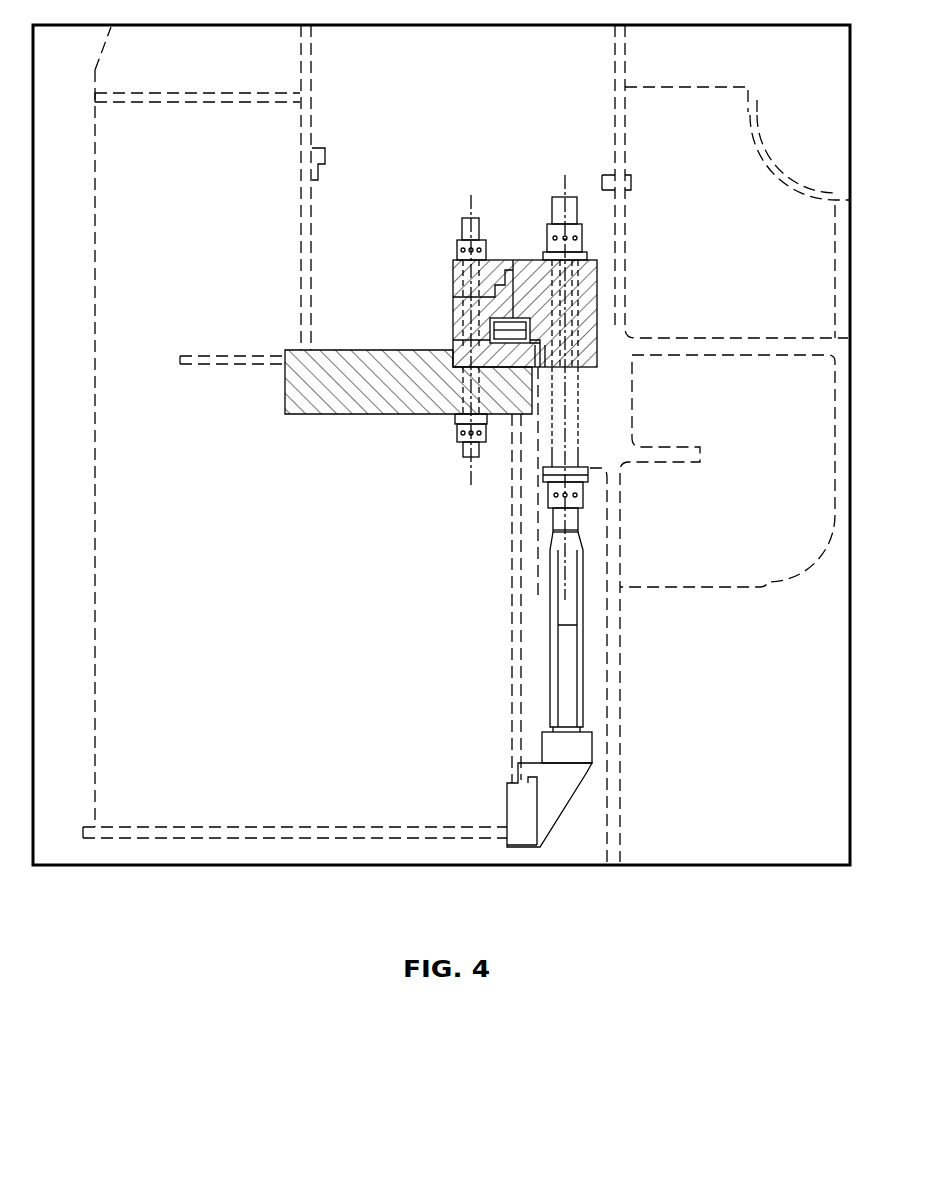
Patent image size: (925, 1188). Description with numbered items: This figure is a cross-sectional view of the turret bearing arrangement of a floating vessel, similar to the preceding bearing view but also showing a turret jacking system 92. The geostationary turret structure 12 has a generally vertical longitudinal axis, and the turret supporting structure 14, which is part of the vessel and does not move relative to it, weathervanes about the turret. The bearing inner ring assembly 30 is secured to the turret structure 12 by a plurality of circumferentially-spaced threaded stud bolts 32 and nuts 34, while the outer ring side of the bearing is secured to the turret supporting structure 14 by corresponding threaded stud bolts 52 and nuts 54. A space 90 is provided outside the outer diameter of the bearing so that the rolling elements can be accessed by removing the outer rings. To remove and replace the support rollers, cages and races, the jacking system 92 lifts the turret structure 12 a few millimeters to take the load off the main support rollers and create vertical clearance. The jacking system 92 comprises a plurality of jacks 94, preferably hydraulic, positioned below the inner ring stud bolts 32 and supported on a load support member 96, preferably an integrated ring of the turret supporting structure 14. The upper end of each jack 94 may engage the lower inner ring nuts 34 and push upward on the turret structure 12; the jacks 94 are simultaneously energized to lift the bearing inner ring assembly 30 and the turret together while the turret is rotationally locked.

The turret structure 12 is at (615, 411).
The turret supporting structure 14 is at (298, 383).
The bearing inner ring assembly 30 is at (600, 316).
The threaded stud bolts 32 is at (551, 201).
The nuts 34 is at (547, 236).
The threaded stud bolts 52 is at (460, 455).
The nuts 54 is at (455, 436).
The space 90 is at (388, 300).
The jacking system 92 is at (548, 692).
The jacks 94 is at (580, 750).
The load support member 96 is at (517, 812).